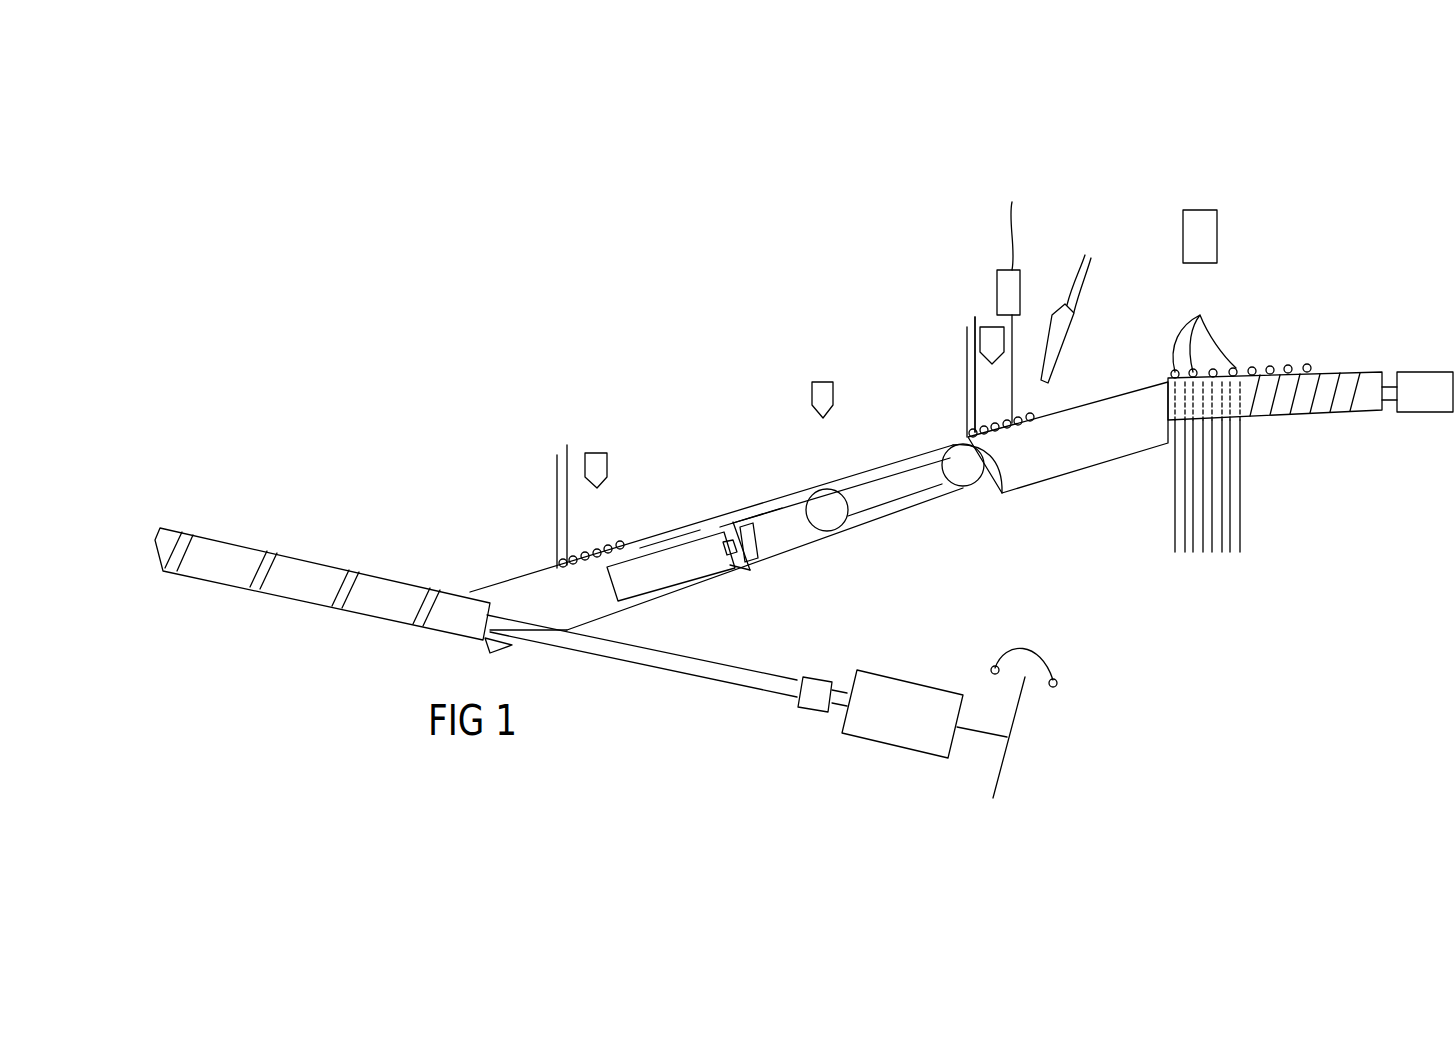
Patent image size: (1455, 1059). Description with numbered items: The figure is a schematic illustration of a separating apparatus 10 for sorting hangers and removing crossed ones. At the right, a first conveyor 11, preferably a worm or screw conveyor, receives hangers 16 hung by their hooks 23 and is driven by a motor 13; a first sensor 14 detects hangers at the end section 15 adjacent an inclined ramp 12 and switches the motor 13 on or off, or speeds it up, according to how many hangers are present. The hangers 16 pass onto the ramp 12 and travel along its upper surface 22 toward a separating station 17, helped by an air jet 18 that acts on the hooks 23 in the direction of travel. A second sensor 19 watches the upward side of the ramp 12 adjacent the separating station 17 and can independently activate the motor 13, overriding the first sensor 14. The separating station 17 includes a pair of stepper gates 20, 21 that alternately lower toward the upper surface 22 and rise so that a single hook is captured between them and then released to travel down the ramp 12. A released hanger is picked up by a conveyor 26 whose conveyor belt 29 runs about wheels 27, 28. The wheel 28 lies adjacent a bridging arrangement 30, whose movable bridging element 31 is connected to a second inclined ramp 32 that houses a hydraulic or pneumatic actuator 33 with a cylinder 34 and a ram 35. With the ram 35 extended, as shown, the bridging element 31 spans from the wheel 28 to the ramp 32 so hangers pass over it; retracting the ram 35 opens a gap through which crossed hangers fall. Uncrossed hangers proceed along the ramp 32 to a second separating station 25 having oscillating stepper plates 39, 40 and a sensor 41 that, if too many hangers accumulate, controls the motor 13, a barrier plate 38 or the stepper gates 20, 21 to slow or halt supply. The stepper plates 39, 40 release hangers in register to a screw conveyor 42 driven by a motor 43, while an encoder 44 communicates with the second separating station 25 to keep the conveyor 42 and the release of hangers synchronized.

The separating apparatus 10 is at (687, 382).
The first conveyor 11 is at (1313, 403).
The inclined ramp 12 is at (1072, 448).
The motor 13 is at (1418, 395).
The first sensor 14 is at (1203, 230).
The end section 15 is at (1180, 392).
The hangers 16 is at (1248, 350).
The separating station 17 is at (943, 390).
The air jet 18 is at (1077, 268).
The second sensor 19 is at (983, 323).
The stepper gate 20 is at (967, 350).
The stepper gate 21 is at (975, 323).
The upper surface 22 is at (1102, 400).
The hooks 23 is at (1204, 336).
The second separating station 25 is at (533, 513).
The conveyor 26 is at (927, 482).
The wheel 27 is at (965, 470).
The wheel 28 is at (827, 513).
The conveyor belt 29 is at (903, 450).
The bridging arrangement 30 is at (732, 498).
The bridging element 31 is at (782, 500).
The inclined ramp 32 is at (687, 530).
The hydraulic or pneumatic actuator 33 is at (625, 583).
The cylinder 34 is at (692, 560).
The ram 35 is at (740, 577).
The barrier plate 38 is at (812, 387).
The stepper plate 39 is at (567, 447).
The stepper plate 40 is at (557, 467).
The sensor 41 is at (600, 465).
The conveyor 42 is at (306, 573).
The motor 43 is at (915, 690).
The encoder 44 is at (1018, 713).